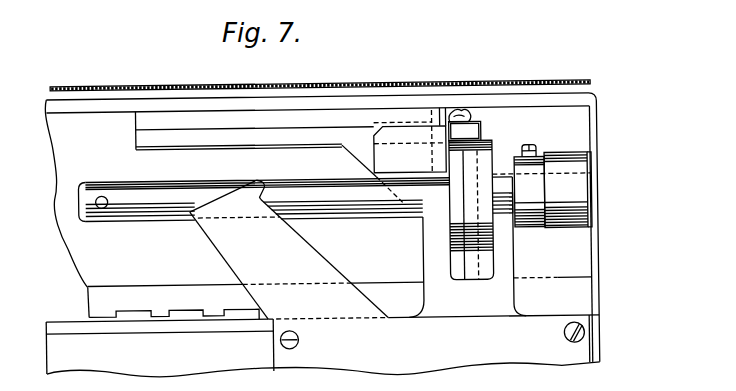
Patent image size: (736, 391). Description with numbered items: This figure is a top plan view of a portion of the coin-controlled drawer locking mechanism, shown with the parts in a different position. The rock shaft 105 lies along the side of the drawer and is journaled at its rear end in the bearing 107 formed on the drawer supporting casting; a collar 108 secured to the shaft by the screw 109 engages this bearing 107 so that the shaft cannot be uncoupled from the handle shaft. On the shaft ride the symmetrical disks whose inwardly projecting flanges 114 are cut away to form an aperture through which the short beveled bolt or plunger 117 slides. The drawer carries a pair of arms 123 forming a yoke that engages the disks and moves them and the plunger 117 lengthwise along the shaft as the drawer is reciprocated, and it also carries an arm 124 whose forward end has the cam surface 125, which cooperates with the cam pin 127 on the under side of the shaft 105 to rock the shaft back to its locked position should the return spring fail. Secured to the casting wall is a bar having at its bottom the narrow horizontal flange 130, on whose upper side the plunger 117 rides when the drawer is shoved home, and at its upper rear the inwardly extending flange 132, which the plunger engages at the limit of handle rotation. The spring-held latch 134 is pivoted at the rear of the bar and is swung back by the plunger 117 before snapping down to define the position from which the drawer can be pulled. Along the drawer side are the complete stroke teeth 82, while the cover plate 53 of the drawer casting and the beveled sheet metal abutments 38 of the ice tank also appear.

The sheet metal abutments 38 is at (231, 87).
The horizontal flange 130 is at (183, 151).
The inwardly extending flange 132 is at (422, 158).
The rock shaft 105 is at (147, 224).
The cam lug or pin 127 is at (104, 197).
The arm 124 is at (288, 250).
The cam surface 125 is at (222, 197).
The arms forming a yoke 123 is at (424, 268).
The complete stroke teeth 82 is at (174, 313).
The cover plate 53 is at (323, 347).
The latch 134 is at (470, 128).
The bolt or plunger 117 is at (472, 136).
The inwardly projecting flanges 114 is at (485, 240).
The collar 108 is at (535, 234).
The bearing 107 is at (556, 234).
The screw 109 is at (538, 146).